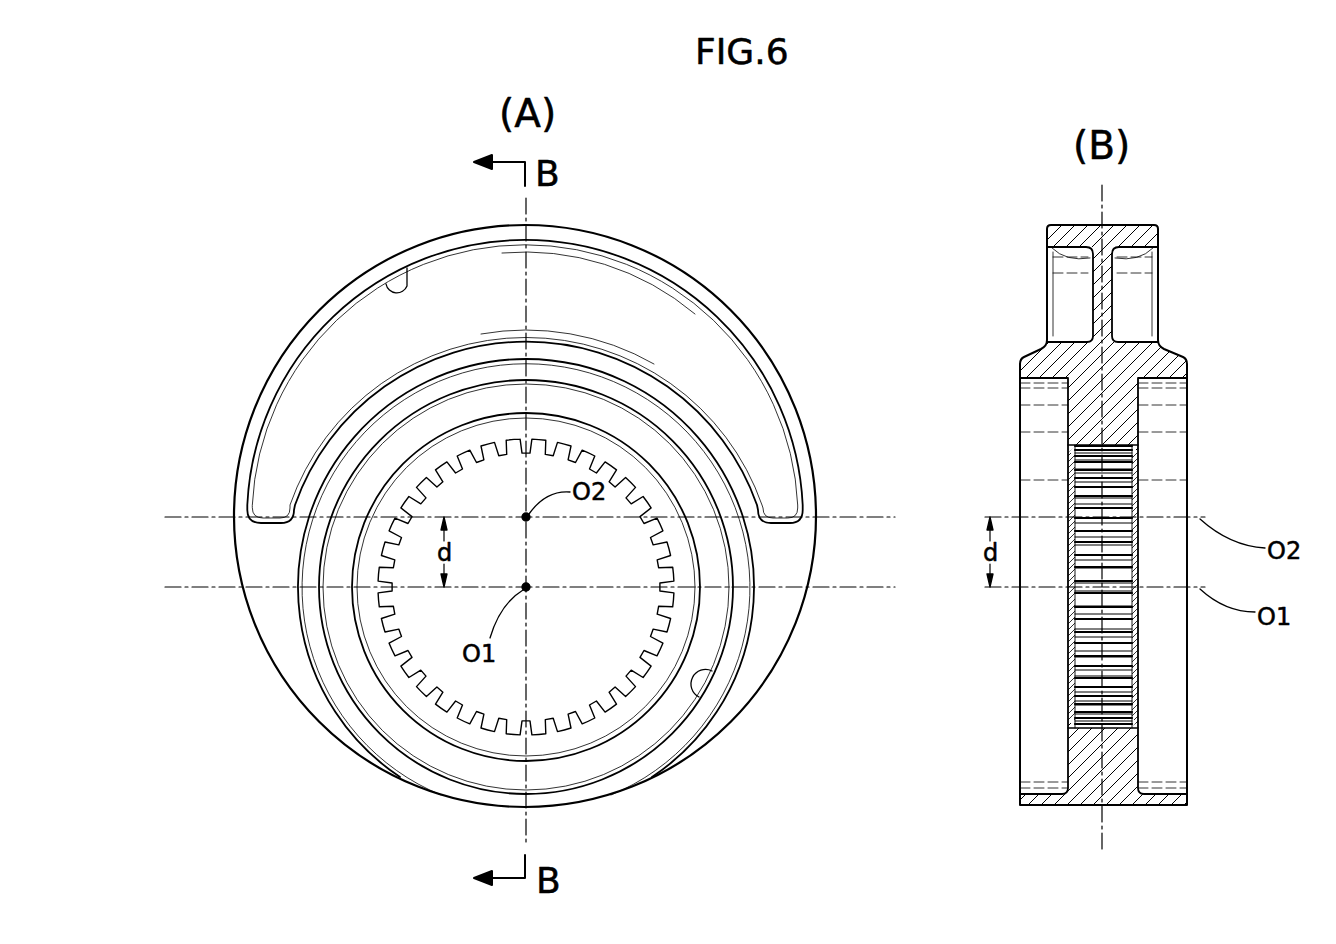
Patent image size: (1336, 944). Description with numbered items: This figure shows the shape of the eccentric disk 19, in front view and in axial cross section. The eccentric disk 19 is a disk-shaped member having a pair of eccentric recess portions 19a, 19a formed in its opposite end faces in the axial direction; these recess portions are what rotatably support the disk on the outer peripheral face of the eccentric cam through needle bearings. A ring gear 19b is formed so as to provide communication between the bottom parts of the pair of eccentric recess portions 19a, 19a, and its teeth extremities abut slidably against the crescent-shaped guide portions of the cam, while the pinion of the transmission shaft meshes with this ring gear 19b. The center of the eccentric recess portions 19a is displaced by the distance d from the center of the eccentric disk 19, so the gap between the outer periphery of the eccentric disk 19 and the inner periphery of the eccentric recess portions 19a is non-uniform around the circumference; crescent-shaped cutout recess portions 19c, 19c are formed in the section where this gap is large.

The eccentric disk 19 is at (752, 312).
The eccentric recess portion 19a is at (706, 674).
The ring gear 19b is at (591, 702).
The cutout recess portion 19c is at (384, 284).